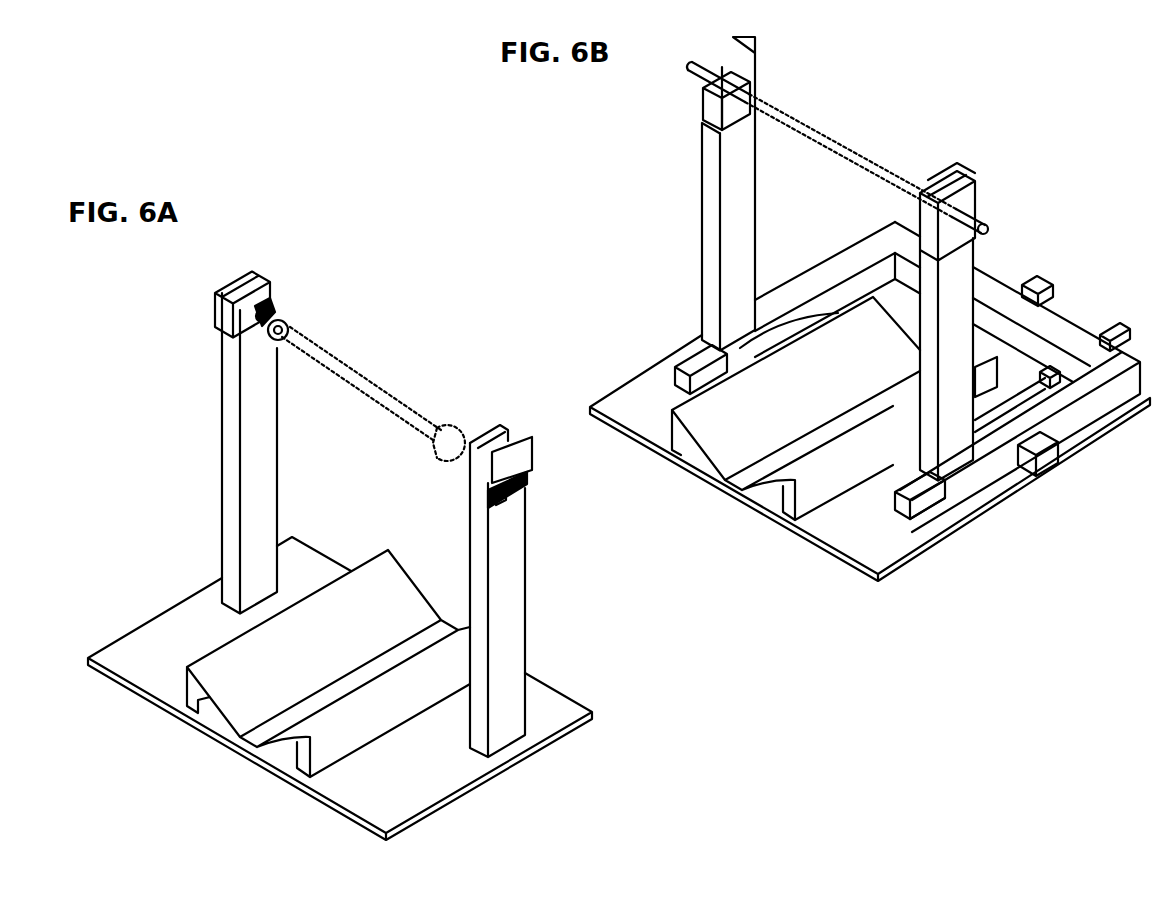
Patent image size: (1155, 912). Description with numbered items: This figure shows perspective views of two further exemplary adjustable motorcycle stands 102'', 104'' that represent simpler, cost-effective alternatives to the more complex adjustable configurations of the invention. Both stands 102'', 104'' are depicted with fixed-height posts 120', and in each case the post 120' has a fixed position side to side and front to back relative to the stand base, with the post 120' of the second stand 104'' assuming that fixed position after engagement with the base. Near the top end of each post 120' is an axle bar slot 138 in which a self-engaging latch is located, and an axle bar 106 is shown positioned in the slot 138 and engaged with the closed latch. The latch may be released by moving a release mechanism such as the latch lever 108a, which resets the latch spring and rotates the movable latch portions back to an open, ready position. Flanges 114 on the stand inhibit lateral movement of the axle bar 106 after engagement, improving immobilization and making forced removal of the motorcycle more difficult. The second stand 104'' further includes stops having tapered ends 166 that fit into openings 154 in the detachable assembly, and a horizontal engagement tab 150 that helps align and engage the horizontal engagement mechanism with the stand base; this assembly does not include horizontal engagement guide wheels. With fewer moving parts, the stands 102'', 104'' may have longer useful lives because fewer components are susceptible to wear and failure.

In FIG. 6A, the adjustable motorcycle stand 102'' is at (344, 691).
In FIG. 6B, the adjustable motorcycle stand 104'' is at (870, 401).
In FIG. 6A, the axle bar 106 is at (323, 348).
In FIG. 6B, the latch lever 108a is at (957, 240).
In FIG. 6A, the flange 114 is at (536, 454).
In FIG. 6A, the fixed-height post 120' is at (458, 525).
In FIG. 6B, the fixed-height post 120' is at (623, 194).
In FIG. 6A, the axle bar slot 138 is at (272, 307).
In FIG. 6B, the horizontal engagement tab 150 is at (1102, 330).
In FIG. 6B, the opening 154 is at (700, 342).
In FIG. 6B, the tapered end 166 is at (933, 511).